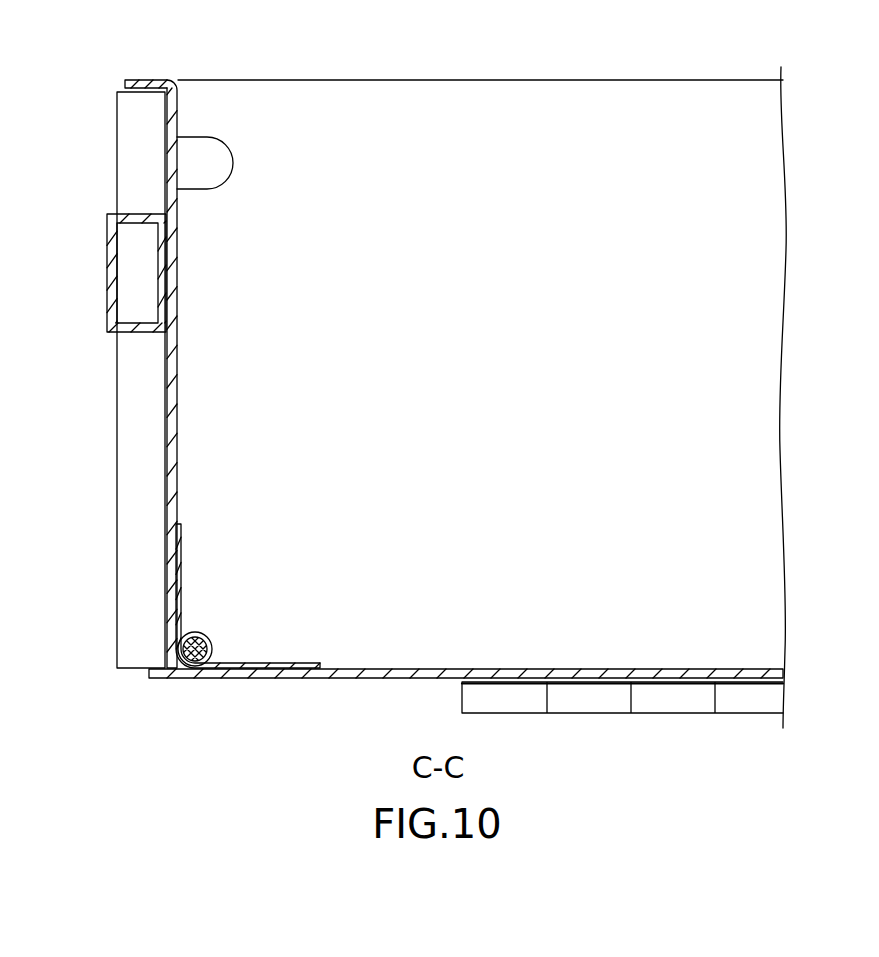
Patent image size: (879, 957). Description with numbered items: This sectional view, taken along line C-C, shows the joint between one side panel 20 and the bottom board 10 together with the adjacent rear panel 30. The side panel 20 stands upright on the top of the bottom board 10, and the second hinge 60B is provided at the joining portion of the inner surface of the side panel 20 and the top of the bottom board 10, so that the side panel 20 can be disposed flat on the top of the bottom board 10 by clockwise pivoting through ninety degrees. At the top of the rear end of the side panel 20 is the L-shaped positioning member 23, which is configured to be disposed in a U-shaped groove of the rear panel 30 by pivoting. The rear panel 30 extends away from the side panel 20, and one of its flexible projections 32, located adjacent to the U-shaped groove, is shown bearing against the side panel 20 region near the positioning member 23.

The bottom board 10 is at (340, 672).
The side panel 20 is at (172, 390).
The L-shaped positioning member 23 is at (143, 84).
The rear panel 30 is at (520, 132).
The flexible projection 32 is at (210, 157).
The second hinge 60B is at (181, 646).